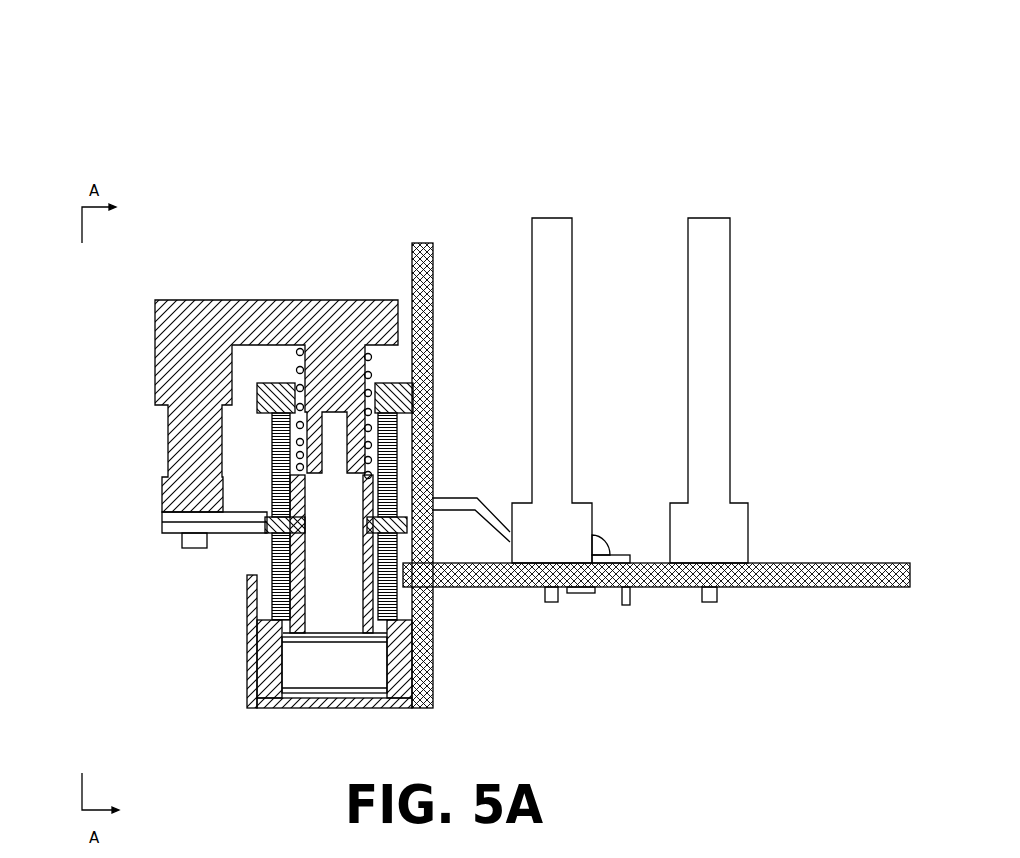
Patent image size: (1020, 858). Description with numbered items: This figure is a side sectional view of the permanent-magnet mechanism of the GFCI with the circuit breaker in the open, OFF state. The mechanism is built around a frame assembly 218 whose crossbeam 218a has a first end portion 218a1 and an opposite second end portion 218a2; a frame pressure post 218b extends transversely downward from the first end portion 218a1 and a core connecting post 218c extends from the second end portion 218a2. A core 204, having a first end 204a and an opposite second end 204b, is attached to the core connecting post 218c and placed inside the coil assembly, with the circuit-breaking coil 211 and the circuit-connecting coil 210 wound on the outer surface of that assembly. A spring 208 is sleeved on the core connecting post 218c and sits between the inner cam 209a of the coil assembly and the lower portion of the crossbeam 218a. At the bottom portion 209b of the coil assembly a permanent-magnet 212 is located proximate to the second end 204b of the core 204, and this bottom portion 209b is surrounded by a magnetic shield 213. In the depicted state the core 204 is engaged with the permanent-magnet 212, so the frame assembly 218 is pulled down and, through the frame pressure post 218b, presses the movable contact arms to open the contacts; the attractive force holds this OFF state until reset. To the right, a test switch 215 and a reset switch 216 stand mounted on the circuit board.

The frame assembly 218 is at (422, 447).
The crossbeam 218a is at (283, 322).
The first end portion 218a1 is at (183, 323).
The second end portion 218a2 is at (380, 325).
The frame pressure post 218b is at (183, 367).
The core connecting post 218c is at (333, 377).
The circuit-connecting coil 210 is at (277, 462).
The core 204 is at (275, 545).
The first end 204a is at (345, 410).
The second end 204b is at (345, 625).
The inner cam 209a is at (370, 472).
The bottom portion 209b is at (397, 687).
The circuit-breaking coil 211 is at (280, 593).
The permanent-magnet 212 is at (317, 663).
The magnetic shield 213 is at (353, 700).
The spring 208 is at (370, 357).
The test switch 215 is at (558, 265).
The reset switch 216 is at (718, 303).